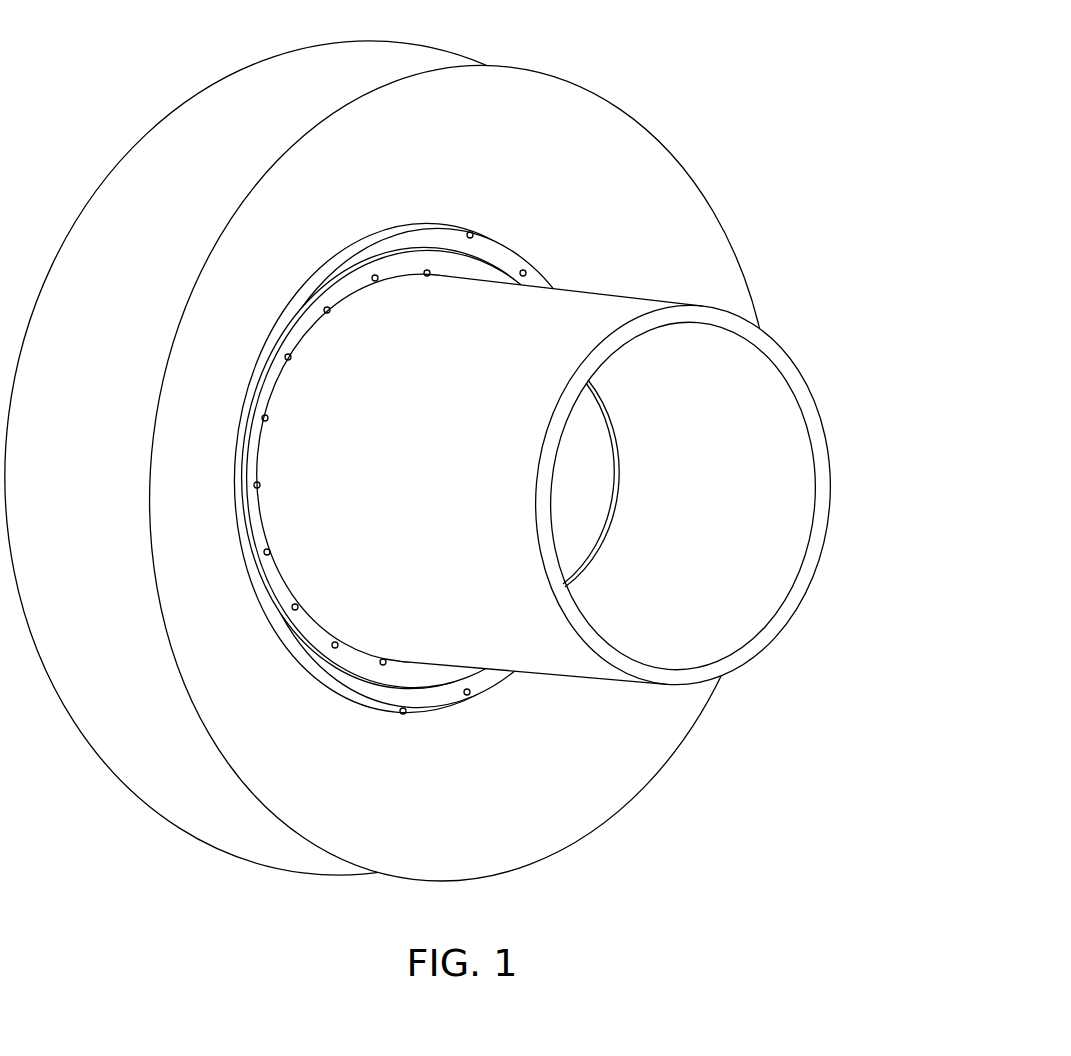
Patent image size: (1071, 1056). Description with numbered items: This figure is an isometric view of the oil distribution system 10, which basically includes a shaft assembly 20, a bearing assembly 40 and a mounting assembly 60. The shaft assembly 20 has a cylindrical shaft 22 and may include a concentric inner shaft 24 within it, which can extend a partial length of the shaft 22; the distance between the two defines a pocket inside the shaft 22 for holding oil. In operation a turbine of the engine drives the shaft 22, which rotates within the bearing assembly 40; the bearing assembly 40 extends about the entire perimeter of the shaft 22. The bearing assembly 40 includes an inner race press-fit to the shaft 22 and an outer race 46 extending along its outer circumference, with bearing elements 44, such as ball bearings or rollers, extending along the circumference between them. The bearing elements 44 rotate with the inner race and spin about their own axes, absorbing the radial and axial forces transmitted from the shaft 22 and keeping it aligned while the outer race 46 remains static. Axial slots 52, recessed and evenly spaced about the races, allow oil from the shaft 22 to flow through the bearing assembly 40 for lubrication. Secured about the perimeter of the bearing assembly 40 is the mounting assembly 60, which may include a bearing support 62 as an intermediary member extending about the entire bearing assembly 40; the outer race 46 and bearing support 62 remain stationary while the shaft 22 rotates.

The oil distribution system 10 is at (463, 458).
The shaft assembly 20 is at (663, 503).
The shaft 22 is at (527, 652).
The concentric inner shaft 24 is at (585, 512).
The bearing assembly 40 is at (420, 490).
The bearing elements 44 is at (273, 590).
The outer race 46 is at (365, 695).
The axial slots 52 is at (296, 604).
The mounting assembly 60 is at (409, 458).
The bearing support 62 is at (532, 97).